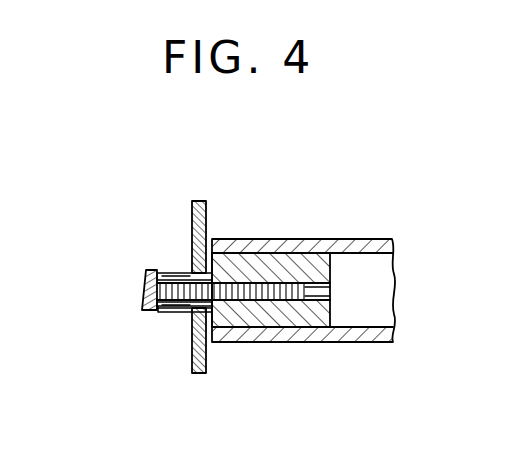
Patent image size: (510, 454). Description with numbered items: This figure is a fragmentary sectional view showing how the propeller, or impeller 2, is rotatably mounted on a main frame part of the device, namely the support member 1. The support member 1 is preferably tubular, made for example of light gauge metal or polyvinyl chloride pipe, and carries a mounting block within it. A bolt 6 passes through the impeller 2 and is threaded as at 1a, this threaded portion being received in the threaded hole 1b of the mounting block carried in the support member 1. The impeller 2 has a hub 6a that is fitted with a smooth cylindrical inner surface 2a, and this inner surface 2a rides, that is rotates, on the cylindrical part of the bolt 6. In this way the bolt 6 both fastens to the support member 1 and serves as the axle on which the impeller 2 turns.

The support member 1 is at (378, 342).
The threaded portion of bolt 1a is at (282, 322).
The threaded hole 1b is at (324, 291).
The impeller 2 is at (192, 211).
The smooth cylindrical inner surface 2a is at (172, 313).
The bolt 6 is at (142, 288).
The hub 6a is at (177, 270).